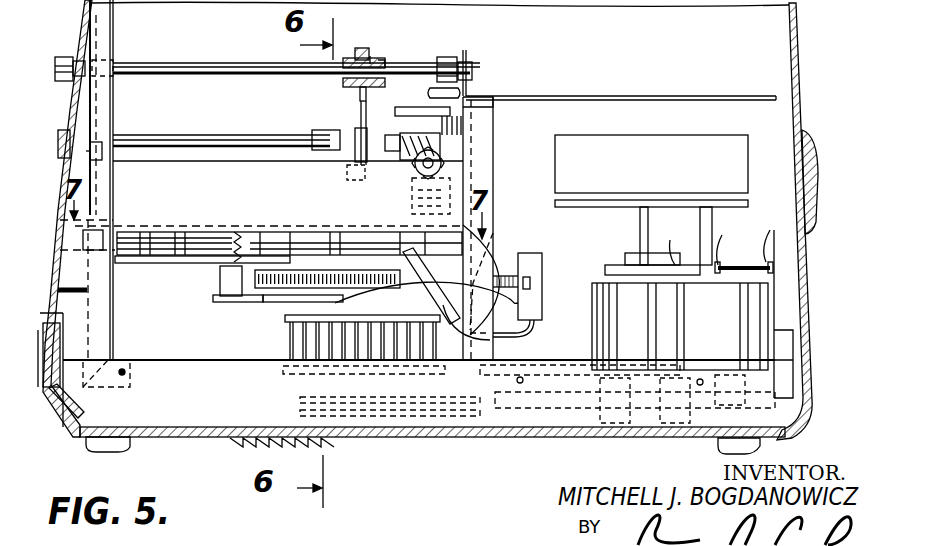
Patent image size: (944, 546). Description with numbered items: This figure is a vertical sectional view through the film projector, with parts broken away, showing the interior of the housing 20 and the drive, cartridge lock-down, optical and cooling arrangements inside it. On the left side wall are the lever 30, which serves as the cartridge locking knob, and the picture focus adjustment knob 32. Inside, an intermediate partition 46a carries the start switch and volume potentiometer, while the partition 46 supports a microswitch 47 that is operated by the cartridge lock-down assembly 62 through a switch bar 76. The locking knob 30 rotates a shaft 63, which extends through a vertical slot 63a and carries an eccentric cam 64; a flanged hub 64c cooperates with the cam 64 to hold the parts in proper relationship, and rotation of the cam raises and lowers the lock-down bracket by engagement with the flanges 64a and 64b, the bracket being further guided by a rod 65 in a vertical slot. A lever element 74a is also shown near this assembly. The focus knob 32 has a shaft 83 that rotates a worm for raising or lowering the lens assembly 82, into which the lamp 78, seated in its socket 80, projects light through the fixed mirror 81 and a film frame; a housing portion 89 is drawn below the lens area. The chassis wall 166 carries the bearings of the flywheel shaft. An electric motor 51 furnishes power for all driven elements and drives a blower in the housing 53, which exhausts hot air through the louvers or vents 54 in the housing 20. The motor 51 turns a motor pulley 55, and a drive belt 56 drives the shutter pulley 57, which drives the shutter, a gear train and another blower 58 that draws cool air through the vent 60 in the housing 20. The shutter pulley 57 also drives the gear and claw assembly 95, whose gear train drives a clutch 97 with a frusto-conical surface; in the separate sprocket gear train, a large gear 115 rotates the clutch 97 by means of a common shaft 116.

The housing 20 is at (797, 82).
The lever 30 is at (62, 58).
The picture focus adjustment knob 32 is at (62, 135).
The intermediate partition 46a is at (115, 26).
The shaft 63 is at (238, 66).
The eccentric cam 64 is at (343, 62).
The flange 64a is at (347, 48).
The vertical slot 63a is at (372, 56).
The flanged hub 64c is at (382, 62).
The switch bar 76 is at (449, 56).
The microswitch 47 is at (470, 60).
The flange 64b is at (343, 94).
The lever 74a is at (440, 96).
The lock-down assembly 62 is at (350, 122).
The shaft 83 is at (252, 138).
The partition 46 is at (490, 138).
The housing 53 is at (673, 147).
The louvers or vents 54 is at (818, 187).
The chassis wall 166 is at (258, 228).
The rod 65 is at (330, 176).
The clutch 97 is at (345, 228).
The lens assembly 82 is at (392, 183).
The gear housing 89 is at (410, 192).
The lamp 78 is at (490, 256).
The socket 80 is at (540, 280).
The fixed mirror 81 is at (530, 295).
The electric motor 51 is at (726, 323).
The gear and claw assembly 95 is at (222, 286).
The common shaft 116 is at (320, 302).
The blower 58 is at (296, 340).
The large gear 115 is at (490, 340).
The vent 60 is at (232, 452).
The shutter pulley 57 is at (408, 418).
The drive belt 56 is at (511, 418).
The motor pulley 55 is at (642, 418).